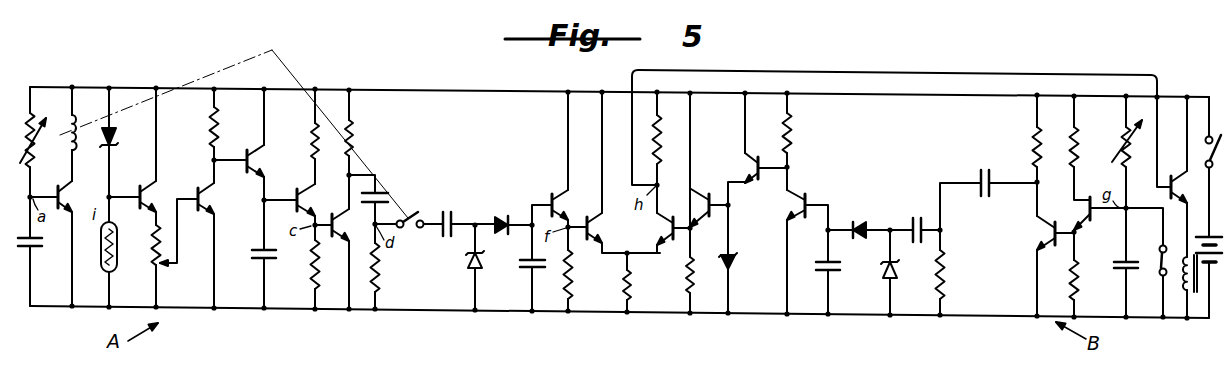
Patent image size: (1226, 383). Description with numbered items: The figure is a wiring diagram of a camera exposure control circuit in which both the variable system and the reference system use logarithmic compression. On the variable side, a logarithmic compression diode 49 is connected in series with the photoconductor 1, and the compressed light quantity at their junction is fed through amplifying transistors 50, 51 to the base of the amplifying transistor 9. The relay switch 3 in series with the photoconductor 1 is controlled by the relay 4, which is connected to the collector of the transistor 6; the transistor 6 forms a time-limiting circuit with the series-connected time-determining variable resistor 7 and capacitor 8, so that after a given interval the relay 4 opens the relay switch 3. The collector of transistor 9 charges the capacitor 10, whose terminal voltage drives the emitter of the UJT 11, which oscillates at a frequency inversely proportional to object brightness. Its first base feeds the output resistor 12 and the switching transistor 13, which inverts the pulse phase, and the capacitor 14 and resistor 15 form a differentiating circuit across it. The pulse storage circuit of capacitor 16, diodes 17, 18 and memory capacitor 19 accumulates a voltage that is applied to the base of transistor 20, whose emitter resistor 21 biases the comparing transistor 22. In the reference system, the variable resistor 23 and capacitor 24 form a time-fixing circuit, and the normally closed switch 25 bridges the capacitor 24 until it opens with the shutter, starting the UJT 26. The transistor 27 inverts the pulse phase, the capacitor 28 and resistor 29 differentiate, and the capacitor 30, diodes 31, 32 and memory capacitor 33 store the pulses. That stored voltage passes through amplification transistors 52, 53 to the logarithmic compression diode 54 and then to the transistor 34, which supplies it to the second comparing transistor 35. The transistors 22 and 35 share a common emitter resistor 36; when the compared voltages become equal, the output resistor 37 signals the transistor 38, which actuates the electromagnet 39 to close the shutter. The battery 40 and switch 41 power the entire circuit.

The photoconductor 1 is at (101, 263).
The relay switch 3 is at (412, 214).
The relay 4 is at (76, 149).
The transistor 6 is at (54, 196).
The time-determining variable resistor 7 is at (35, 150).
The capacitor 8 is at (37, 247).
The amplifying transistor 9 is at (252, 170).
The capacitor 10 is at (257, 258).
The UJT 11 is at (300, 189).
The output resistor 12 is at (310, 283).
The switching transistor 13 is at (334, 238).
The capacitor 14 is at (381, 199).
The resistor 15 is at (380, 277).
The capacitor 16 is at (447, 212).
The diode 17 is at (506, 212).
The diode 18 is at (468, 262).
The memory capacitor 19 is at (520, 264).
The transistor 20 is at (556, 186).
The resistor 21 is at (564, 272).
The transistor 22 is at (590, 228).
The variable resistor 23 is at (1120, 150).
The capacitor 24 is at (1114, 264).
The switch 25 is at (1159, 250).
The UJT 26 is at (1087, 223).
The transistor 27 is at (1053, 233).
The capacitor 28 is at (985, 195).
The resistor 29 is at (944, 276).
The capacitor 30 is at (917, 217).
The diode 31 is at (857, 220).
The diode 32 is at (884, 272).
The memory capacitor 33 is at (818, 266).
The transistor 34 is at (707, 203).
The transistor 35 is at (665, 243).
The common emitter resistor 36 is at (622, 289).
The output resistor 37 is at (660, 147).
The transistor 38 is at (1170, 175).
The electromagnet 39 is at (1183, 292).
The battery 40 is at (1196, 240).
The switch 41 is at (1205, 141).
The logarithmic compression diode 49 is at (121, 139).
The amplifying transistor 50 is at (148, 223).
The amplifying transistor 51 is at (199, 212).
The amplification transistor 52 is at (803, 194).
The amplification transistor 53 is at (756, 168).
The logarithmic compression diode 54 is at (740, 263).